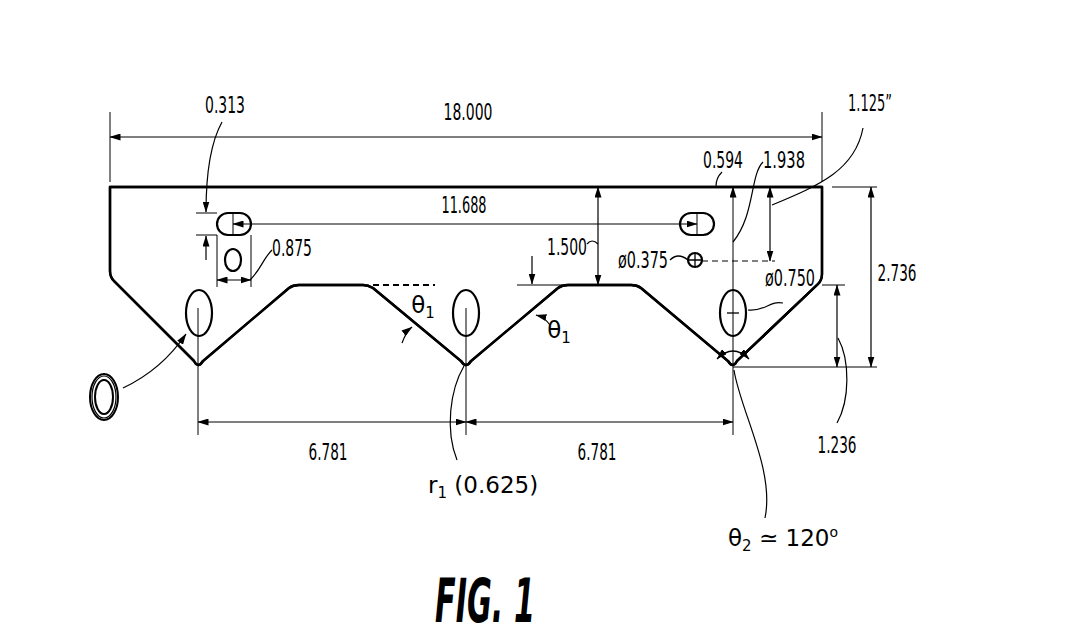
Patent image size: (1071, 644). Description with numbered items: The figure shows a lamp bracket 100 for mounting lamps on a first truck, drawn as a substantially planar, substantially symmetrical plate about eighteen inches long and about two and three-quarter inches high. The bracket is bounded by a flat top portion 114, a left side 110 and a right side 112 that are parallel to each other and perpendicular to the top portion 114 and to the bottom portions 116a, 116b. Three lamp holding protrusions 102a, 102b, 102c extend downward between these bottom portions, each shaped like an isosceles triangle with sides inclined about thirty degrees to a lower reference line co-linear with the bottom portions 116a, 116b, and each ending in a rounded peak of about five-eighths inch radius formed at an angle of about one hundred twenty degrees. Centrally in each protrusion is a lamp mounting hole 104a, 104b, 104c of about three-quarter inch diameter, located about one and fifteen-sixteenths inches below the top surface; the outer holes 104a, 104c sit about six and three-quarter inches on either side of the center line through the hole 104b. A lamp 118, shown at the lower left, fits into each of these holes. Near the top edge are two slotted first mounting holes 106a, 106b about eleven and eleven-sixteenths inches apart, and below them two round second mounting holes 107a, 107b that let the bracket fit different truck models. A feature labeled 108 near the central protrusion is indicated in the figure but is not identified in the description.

The lamp bracket 100 is at (773, 60).
The first lamp holding protrusion 102a is at (217, 357).
The second lamp holding protrusion 102b is at (492, 350).
The third lamp holding protrusion 102c is at (705, 353).
The first lamp mounting hole 104a is at (198, 288).
The second lamp mounting hole 104b is at (455, 297).
The third lamp mounting hole 104c is at (721, 313).
The first mounting hole (slot) 106a is at (253, 210).
The first mounting hole (slot) 106b is at (690, 212).
The second mounting hole 107a is at (233, 272).
The second mounting hole 107b is at (690, 270).
The theoretical corner / apex line 108 is at (420, 281).
The left side 110 is at (107, 232).
The right side 112 is at (823, 224).
The top portion 114 is at (538, 187).
The bottom portion 116a is at (317, 288).
The bottom portion 116b is at (580, 288).
The lamp 118 is at (110, 422).